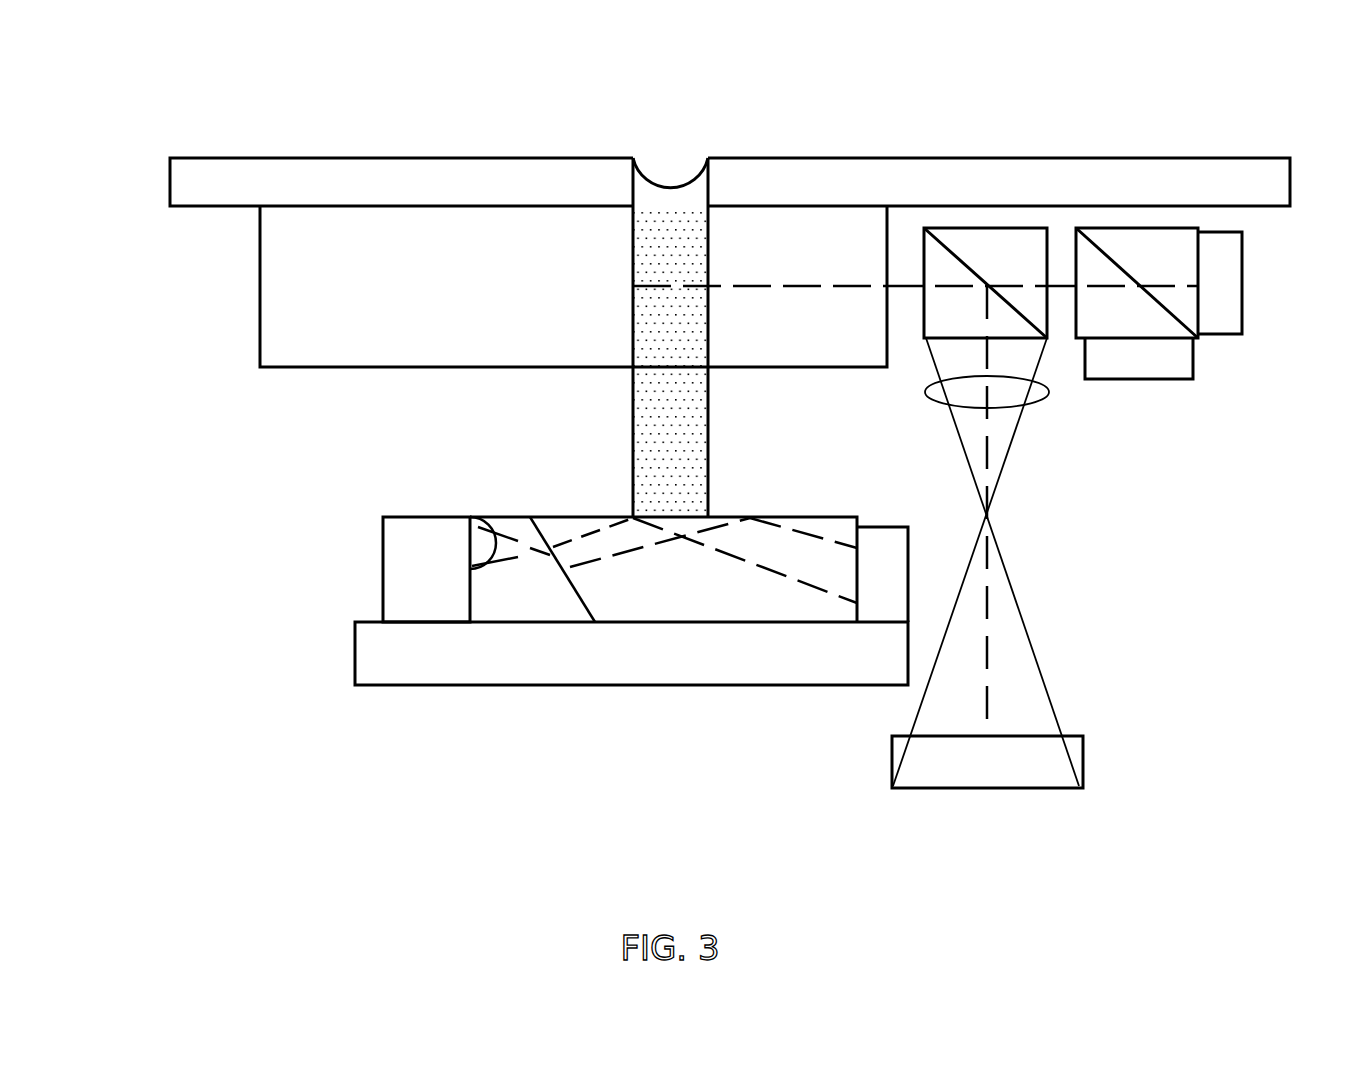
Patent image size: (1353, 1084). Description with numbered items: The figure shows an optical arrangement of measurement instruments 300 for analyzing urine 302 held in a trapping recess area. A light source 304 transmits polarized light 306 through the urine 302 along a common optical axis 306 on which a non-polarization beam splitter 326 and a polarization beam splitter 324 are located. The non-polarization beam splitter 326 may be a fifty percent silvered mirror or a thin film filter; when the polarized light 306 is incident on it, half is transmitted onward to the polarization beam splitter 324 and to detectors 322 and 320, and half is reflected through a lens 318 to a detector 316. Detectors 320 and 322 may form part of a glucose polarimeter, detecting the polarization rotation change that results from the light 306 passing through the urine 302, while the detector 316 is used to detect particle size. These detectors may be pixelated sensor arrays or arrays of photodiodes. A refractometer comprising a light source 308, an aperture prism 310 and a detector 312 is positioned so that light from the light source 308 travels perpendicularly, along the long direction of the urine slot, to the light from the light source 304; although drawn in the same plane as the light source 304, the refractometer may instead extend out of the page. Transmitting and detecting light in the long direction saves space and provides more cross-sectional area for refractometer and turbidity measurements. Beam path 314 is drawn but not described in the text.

The measurement instruments 300 is at (165, 94).
The urine 302 is at (653, 195).
The light source 304 is at (411, 297).
The polarized light 306 is at (802, 287).
The light source 308 is at (401, 584).
The aperture prism 310 is at (575, 590).
The detector 312 is at (883, 527).
The light beam 314 is at (959, 438).
The detector 316 is at (962, 774).
The lens 318 is at (1030, 403).
The detector 320 is at (1139, 358).
The detector 322 is at (1243, 286).
The polarization beam splitter 324 is at (1137, 261).
The non-polarization beam splitter 326 is at (984, 261).